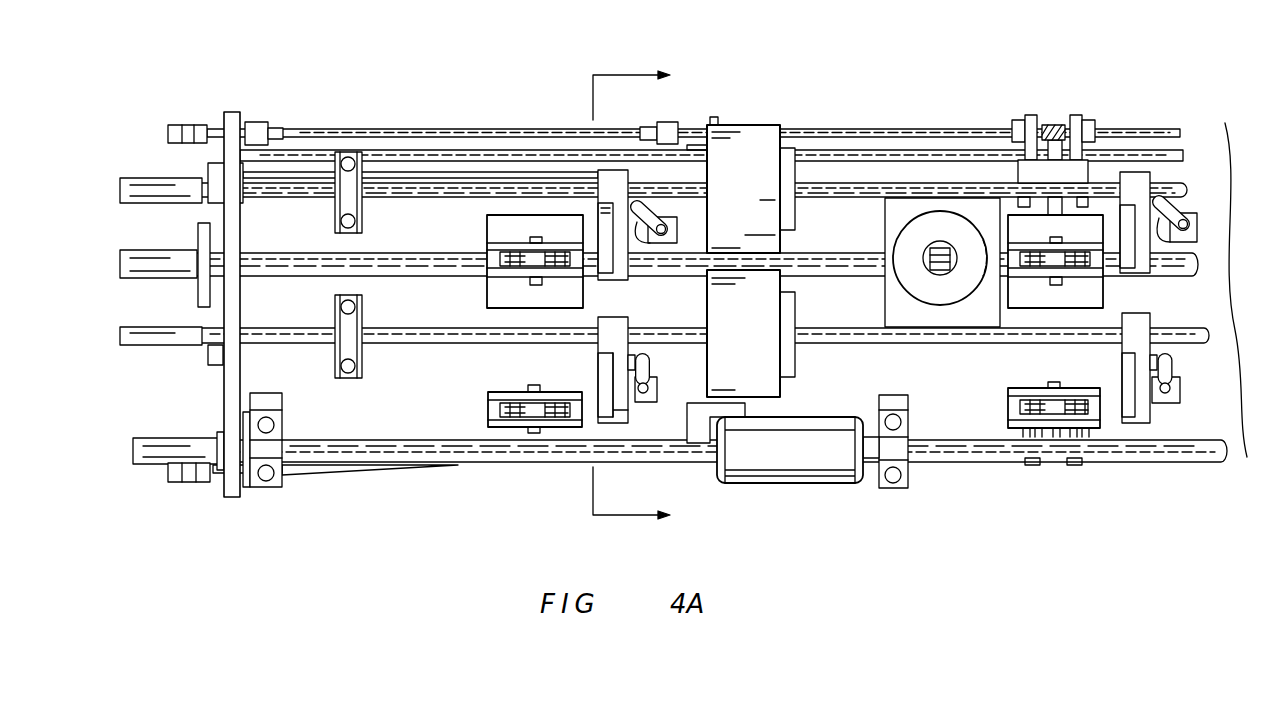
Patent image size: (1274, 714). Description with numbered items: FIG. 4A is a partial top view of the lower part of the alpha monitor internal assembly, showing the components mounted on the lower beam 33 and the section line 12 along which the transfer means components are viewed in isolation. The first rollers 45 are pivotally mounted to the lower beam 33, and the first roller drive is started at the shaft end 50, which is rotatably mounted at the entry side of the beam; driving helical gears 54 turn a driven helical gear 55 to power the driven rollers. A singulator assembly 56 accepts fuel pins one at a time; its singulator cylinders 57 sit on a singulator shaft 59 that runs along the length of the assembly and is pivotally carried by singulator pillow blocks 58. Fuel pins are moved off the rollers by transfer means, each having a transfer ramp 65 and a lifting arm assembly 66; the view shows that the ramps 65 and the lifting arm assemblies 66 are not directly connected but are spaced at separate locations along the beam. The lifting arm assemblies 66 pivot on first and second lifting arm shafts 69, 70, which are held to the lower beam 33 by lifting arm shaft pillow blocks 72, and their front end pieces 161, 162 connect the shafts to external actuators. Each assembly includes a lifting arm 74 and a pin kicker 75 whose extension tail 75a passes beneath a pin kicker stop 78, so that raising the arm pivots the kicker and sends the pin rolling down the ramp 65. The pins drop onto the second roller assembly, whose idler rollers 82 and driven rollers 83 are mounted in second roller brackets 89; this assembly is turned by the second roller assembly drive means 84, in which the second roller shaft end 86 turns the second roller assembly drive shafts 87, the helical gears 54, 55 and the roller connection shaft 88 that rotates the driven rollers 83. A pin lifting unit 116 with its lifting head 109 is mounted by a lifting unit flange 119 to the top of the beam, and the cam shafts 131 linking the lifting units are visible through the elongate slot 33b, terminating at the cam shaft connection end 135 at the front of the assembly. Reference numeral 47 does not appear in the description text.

The section line 12- 12 is at (650, 294).
The lower beam 33 is at (470, 325).
The elongate slot 33b is at (428, 255).
The first rollers 45 is at (514, 400).
The gear assembly 47 is at (1040, 400).
The shaft end 50 is at (183, 483).
The driving helical gears 54 is at (1057, 120).
The driven helical gear 55 is at (1048, 122).
The singulator assembly 56 is at (450, 470).
The singulator cylinders 57 is at (815, 485).
The singulator pillow blocks 58 is at (270, 455).
The singulator shaft 59 is at (150, 447).
The transfer ramp 65 is at (758, 168).
The lifting arm assembly 66 is at (614, 312).
The first lifting arm shaft 69 is at (453, 345).
The second lifting arm shaft 70 is at (455, 197).
The lifting arm shaft pillow blocks 72 is at (338, 206).
The lifting arm 74 is at (620, 410).
The pin kicker 75 is at (606, 372).
The extension tail 75a is at (675, 243).
The pin kicker stops 78 is at (658, 218).
The idler rollers 82 is at (486, 232).
The driven rollers 83 is at (1035, 278).
The second roller assembly drive means 84 is at (406, 122).
The second roller shaft end 86 is at (183, 125).
The second roller assembly drive shafts 87 is at (523, 129).
The roller connection shaft 88 is at (1052, 175).
The second roller brackets 89 is at (548, 234).
The lifting head 109 is at (955, 246).
The pin lifting unit 116 is at (983, 220).
The lifting unit flange 119 is at (900, 302).
The cam shafts 131 is at (313, 277).
The cam shaft connection end 135 is at (172, 257).
The lifting arm shaft front end piece 161 is at (178, 343).
The lifting arm shaft front end piece 162 is at (148, 185).